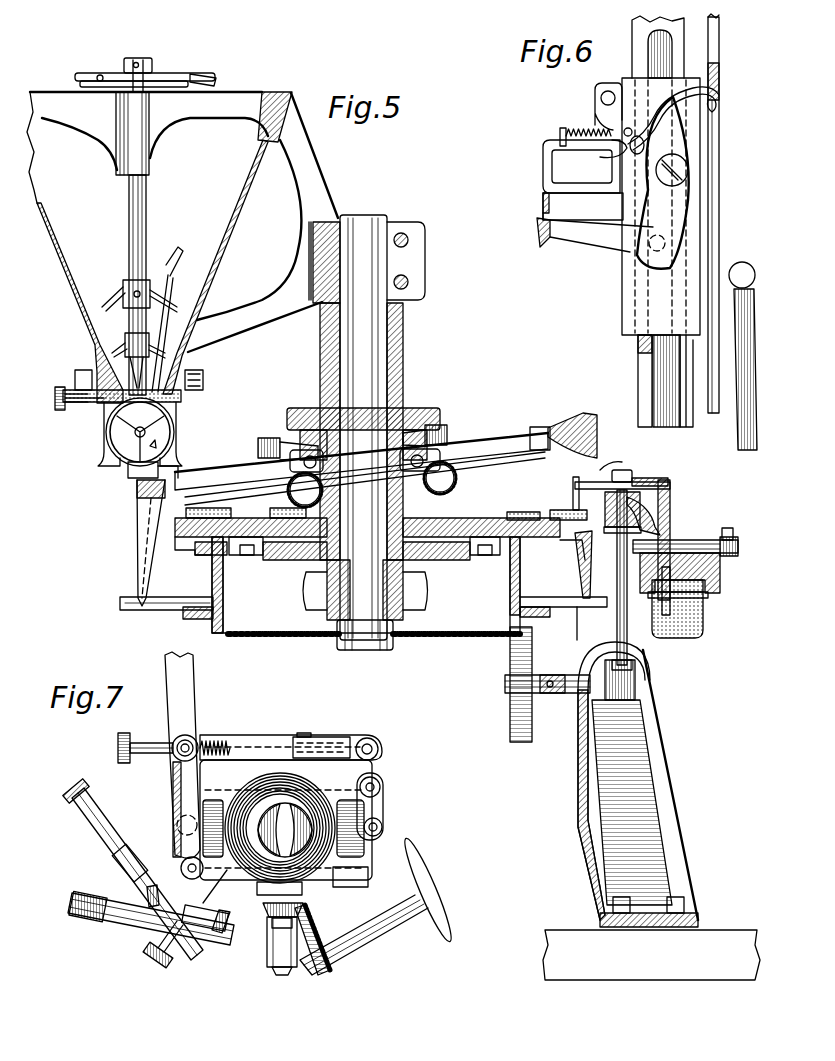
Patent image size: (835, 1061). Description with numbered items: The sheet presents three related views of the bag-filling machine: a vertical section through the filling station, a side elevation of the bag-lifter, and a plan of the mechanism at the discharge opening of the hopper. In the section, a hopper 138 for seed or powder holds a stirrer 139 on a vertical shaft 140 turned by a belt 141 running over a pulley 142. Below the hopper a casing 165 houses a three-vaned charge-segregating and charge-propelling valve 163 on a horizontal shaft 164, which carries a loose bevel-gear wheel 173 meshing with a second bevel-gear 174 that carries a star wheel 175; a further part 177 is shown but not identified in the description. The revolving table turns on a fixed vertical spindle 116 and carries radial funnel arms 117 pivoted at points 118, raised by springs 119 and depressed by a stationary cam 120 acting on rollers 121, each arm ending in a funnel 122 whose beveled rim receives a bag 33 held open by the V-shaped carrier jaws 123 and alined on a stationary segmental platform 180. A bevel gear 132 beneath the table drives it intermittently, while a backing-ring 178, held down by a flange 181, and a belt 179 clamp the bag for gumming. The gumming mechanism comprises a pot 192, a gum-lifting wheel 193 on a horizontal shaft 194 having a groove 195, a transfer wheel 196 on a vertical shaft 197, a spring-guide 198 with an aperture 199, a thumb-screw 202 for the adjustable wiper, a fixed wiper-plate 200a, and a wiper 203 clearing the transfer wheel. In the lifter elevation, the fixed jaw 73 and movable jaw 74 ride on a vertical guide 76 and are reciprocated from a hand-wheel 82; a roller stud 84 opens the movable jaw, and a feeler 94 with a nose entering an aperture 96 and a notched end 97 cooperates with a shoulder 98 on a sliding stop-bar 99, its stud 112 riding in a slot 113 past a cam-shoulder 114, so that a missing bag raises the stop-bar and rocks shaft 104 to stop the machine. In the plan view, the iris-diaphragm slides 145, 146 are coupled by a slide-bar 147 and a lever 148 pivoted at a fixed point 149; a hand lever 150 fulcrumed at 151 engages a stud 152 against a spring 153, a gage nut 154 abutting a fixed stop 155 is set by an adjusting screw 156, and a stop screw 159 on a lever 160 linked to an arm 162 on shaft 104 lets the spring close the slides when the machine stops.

In FIG. 5, the pulley 142 is at (150, 74).
In FIG. 5, the belt 141 is at (204, 80).
In FIG. 5, the vertical shaft 140 is at (138, 197).
In FIG. 5, the stirrer 139 is at (145, 290).
In FIG. 5, the hopper 138 is at (212, 244).
In FIG. 7, the hopper 138 is at (343, 875).
In FIG. 5, the fixed vertical spindle 116 is at (363, 330).
In FIG. 5, the stationary cam 120 is at (427, 417).
In FIG. 5, the rollers 121 is at (284, 440).
In FIG. 5, the radial funnel arms 117 is at (491, 447).
In FIG. 5, the pivot points 118 is at (500, 443).
In FIG. 5, the springs 119 is at (443, 478).
In FIG. 5, the funnels 122 is at (147, 485).
In FIG. 5, the slide 145 is at (100, 402).
In FIG. 7, the slide 145 is at (217, 873).
In FIG. 5, the slide 146 is at (186, 402).
In FIG. 7, the slide 146 is at (363, 810).
In FIG. 5, the casing 165 is at (110, 440).
In FIG. 5, the sleeve 177 is at (183, 465).
In FIG. 5, the three-vaned rotary valve 163 is at (137, 447).
In FIG. 5, the backing-ring 178 is at (176, 520).
In FIG. 5, the flange 181 is at (238, 522).
In FIG. 5, the carrier jaws 123 is at (133, 582).
In FIG. 5, the stationary segmental platform 180 is at (128, 614).
In FIG. 5, the bevel gear 132 is at (262, 632).
In FIG. 5, the bags 33 is at (582, 562).
In FIG. 5, the transfer wheel 196 is at (597, 485).
In FIG. 5, the spring-guide 198 is at (577, 488).
In FIG. 5, the aperture 199 is at (573, 490).
In FIG. 5, the wiper 203 is at (648, 487).
In FIG. 5, the belt 179 is at (638, 510).
In FIG. 5, the gum-lifting wheel 193 is at (670, 523).
In FIG. 5, the horizontal shaft 194 is at (740, 544).
In FIG. 5, the thumb-screw 202 is at (720, 574).
In FIG. 5, the fixed wiper-plate 200a is at (707, 600).
In FIG. 5, the pot 192 is at (703, 618).
In FIG. 5, the groove 195 is at (660, 616).
In FIG. 5, the vertical shaft 197 is at (640, 647).
In FIG. 6, the stop-bar 99 is at (713, 32).
In FIG. 6, the shoulder 98 is at (717, 87).
In FIG. 6, the notched end 97 is at (720, 100).
In FIG. 6, the hand-wheel 82 is at (577, 127).
In FIG. 6, the movable jaw 74 is at (543, 180).
In FIG. 6, the roller stud 84 is at (600, 157).
In FIG. 6, the fixed jaw 73 is at (580, 190).
In FIG. 6, the aperture 96 is at (550, 217).
In FIG. 6, the stud 112 is at (693, 227).
In FIG. 6, the feeler 94 is at (657, 230).
In FIG. 6, the vertical slot 113 is at (638, 347).
In FIG. 6, the vertical guide 76 is at (640, 378).
In FIG. 6, the cam-shoulder 114 is at (657, 390).
In FIG. 7, the hand lever 150 is at (187, 693).
In FIG. 7, the stud 152 is at (173, 740).
In FIG. 7, the spring 153 is at (223, 737).
In FIG. 7, the fixed stop 155 is at (263, 767).
In FIG. 7, the gage nut 154 is at (320, 726).
In FIG. 7, the adjusting screw 156 is at (120, 746).
In FIG. 7, the fixed pivot point 149 is at (388, 775).
In FIG. 7, the lever 148 is at (387, 810).
In FIG. 7, the slide-bar 147 is at (180, 790).
In FIG. 7, the arm 162 is at (103, 842).
In FIG. 7, the star wheel 175 is at (433, 888).
In FIG. 7, the rock-shaft 104 is at (65, 908).
In FIG. 7, the fixed fulcrum 151 is at (145, 898).
In FIG. 7, the lever 160 is at (173, 923).
In FIG. 7, the stop screw 159 is at (212, 933).
In FIG. 7, the horizontal shaft 164 is at (268, 922).
In FIG. 7, the bevel-gear wheel 173 is at (263, 917).
In FIG. 7, the second bevel-gear 174 is at (311, 963).